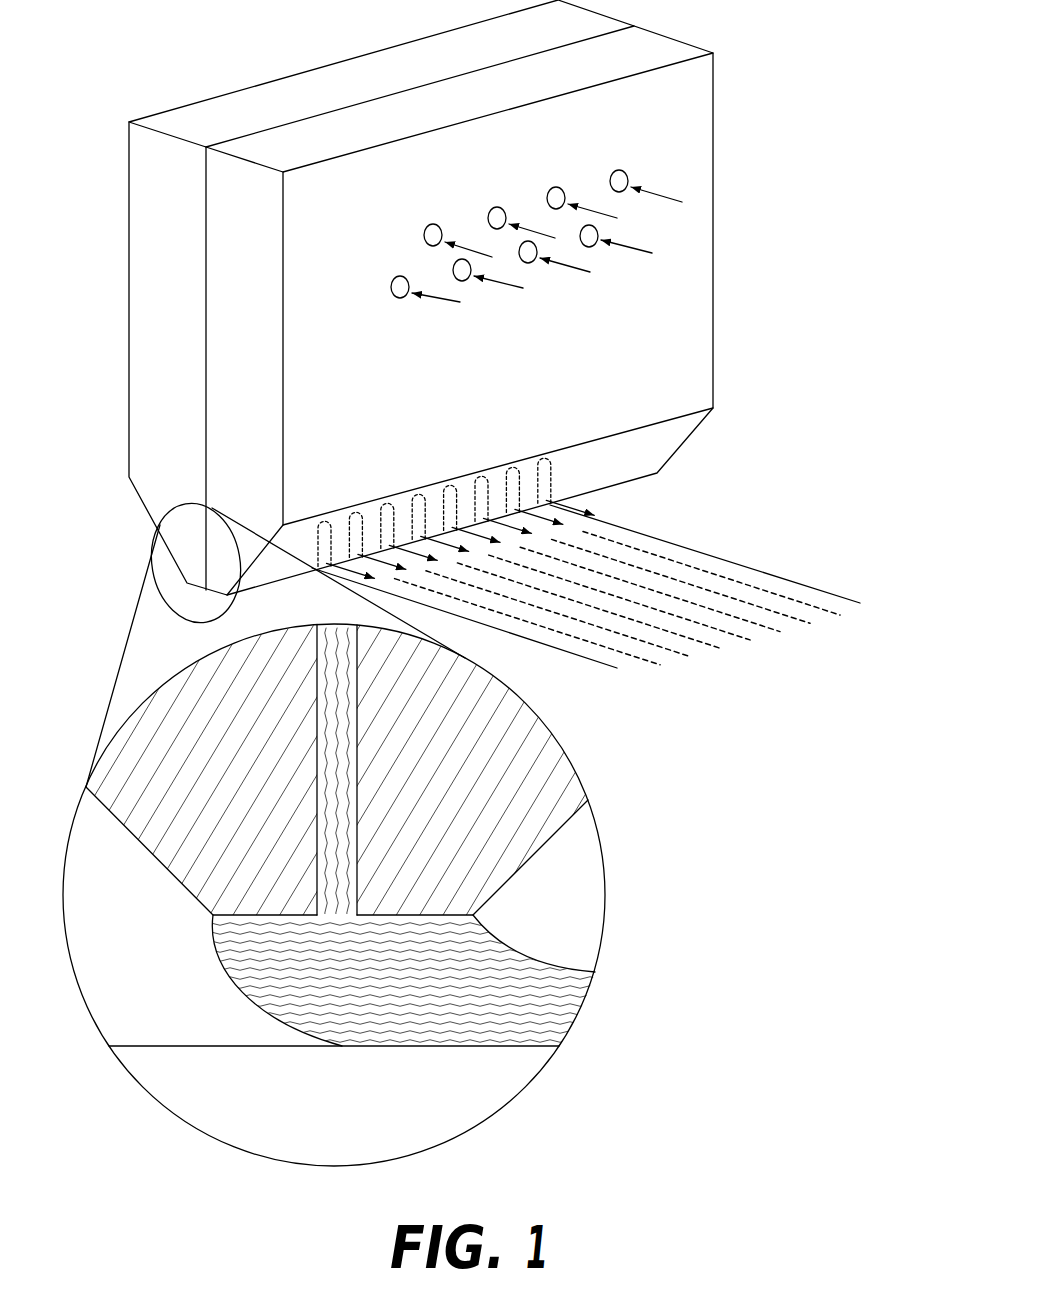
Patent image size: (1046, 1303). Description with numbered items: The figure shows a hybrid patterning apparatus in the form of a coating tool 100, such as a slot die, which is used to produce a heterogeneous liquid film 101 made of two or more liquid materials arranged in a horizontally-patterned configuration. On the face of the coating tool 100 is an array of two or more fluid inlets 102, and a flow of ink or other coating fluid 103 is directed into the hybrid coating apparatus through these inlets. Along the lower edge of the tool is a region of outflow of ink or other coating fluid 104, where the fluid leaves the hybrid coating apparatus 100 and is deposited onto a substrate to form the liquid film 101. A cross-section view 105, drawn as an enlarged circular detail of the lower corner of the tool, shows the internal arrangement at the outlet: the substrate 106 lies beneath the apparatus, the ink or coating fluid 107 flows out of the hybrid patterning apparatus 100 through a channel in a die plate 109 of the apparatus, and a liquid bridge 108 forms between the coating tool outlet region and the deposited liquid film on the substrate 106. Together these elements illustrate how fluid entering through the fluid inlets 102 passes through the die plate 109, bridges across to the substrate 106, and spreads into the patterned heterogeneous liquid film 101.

The coating tool 100 is at (504, 132).
The heterogeneous liquid film 101 is at (647, 621).
The fluid inlets 102 is at (625, 168).
The flow of ink or other coating fluid 103 is at (567, 280).
The region of outflow of ink or other coating fluid 104 is at (583, 533).
The cross-section view 105 is at (517, 1093).
The substrate 106 is at (351, 1117).
The ink or coating fluid outflow 107 is at (338, 740).
The liquid bridge 108 is at (482, 965).
The die plate 109 is at (250, 776).